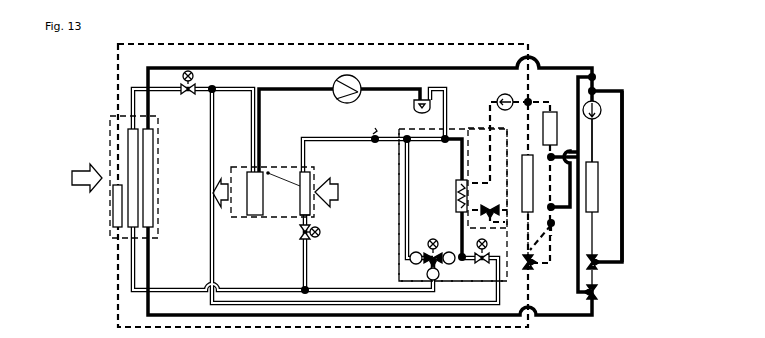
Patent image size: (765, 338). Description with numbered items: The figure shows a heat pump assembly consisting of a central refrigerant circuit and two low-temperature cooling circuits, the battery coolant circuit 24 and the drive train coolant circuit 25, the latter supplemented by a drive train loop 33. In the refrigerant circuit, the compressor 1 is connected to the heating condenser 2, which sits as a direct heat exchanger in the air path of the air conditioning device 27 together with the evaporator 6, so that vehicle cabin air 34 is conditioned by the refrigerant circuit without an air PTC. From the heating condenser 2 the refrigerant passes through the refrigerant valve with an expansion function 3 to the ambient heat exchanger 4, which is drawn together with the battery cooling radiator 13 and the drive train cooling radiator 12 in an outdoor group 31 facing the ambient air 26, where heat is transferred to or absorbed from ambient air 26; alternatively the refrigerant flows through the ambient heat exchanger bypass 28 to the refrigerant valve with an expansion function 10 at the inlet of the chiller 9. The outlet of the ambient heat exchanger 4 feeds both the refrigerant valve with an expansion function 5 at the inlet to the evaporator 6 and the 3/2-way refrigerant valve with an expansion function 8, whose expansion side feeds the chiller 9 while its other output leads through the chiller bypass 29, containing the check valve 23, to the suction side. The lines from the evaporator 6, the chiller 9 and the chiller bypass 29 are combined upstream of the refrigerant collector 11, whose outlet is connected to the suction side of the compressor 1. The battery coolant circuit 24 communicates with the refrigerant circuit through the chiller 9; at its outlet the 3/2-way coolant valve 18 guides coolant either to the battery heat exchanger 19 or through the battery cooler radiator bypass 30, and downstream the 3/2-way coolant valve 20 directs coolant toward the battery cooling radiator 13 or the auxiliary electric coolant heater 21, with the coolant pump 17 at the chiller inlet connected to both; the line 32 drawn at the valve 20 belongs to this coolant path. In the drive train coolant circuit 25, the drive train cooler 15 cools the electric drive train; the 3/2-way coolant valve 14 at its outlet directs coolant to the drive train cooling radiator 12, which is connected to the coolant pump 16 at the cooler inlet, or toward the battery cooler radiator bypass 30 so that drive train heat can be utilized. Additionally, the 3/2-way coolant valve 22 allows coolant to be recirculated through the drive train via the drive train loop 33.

The compressor 1 is at (338, 99).
The heating condenser 2 is at (255, 217).
The refrigerant valve with an expansion function 3 is at (187, 93).
The ambient heat exchanger 4 is at (128, 148).
The refrigerant valve with an expansion function 5 is at (303, 238).
The evaporator 6 is at (300, 215).
The 3/2-way refrigerant valve with an expansion function 8 is at (410, 262).
The chiller 9 is at (456, 190).
The refrigerant valve with an expansion function 10 is at (484, 263).
The refrigerant collector 11 is at (414, 106).
The drive train cooling radiator 12 is at (153, 200).
The battery cooling radiator 13 is at (113, 222).
The 3/2-way coolant valve 14 is at (596, 295).
The drive train cooler 15 is at (598, 200).
The coolant pump 16 is at (586, 105).
The coolant pump 17 is at (497, 100).
The 3/2-way coolant valve 18 is at (488, 203).
The battery heat exchanger 19 is at (530, 170).
The 3/2-way coolant valve 20 is at (526, 275).
The auxiliary electric coolant heater 21 is at (543, 130).
The 3/2-way coolant valve 22 is at (600, 265).
The check valve 23 is at (375, 143).
The battery coolant circuit 24 is at (487, 123).
The drive train coolant circuit 25 is at (593, 150).
The ambient air 26 is at (82, 192).
The air conditioning device 27 is at (312, 172).
The ambient heat exchanger bypass 28 is at (213, 170).
The chiller bypass 29 is at (399, 205).
The battery cooler radiator bypass 30 is at (540, 235).
The outdoor unit 31 is at (110, 128).
The coolant line 32 is at (531, 266).
The drive train loop 33 is at (622, 240).
The vehicle cabin air 34 is at (340, 194).